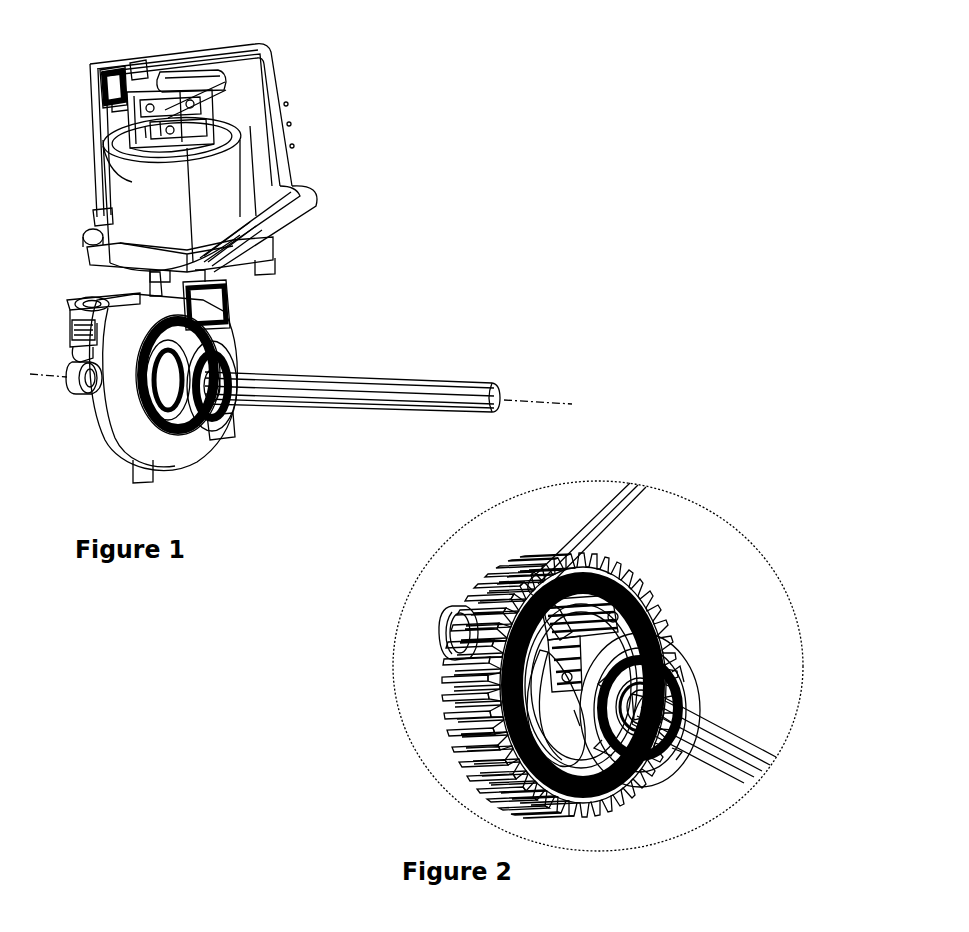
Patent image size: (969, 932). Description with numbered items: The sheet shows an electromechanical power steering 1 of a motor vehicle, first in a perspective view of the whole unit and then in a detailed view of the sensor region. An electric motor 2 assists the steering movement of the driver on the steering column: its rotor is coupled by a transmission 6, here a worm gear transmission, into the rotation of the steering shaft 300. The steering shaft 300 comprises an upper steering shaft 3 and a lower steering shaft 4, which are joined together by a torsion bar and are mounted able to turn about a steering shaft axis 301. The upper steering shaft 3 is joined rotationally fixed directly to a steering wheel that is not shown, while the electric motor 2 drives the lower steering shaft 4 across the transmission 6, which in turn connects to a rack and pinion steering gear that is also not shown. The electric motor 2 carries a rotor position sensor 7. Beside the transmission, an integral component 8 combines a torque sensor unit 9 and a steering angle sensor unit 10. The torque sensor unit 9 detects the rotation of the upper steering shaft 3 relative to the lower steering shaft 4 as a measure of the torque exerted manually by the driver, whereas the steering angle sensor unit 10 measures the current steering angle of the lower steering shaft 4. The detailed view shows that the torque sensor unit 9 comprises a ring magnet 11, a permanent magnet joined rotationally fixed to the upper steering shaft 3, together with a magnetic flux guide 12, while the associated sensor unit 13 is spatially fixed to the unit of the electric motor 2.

In FIG. 1, the electromechanical power steering 1 is at (388, 167).
In FIG. 1, the electric motor 2 is at (212, 206).
In FIG. 1, the upper steering shaft 3 is at (396, 392).
In FIG. 2, the upper steering shaft 3 is at (733, 747).
In FIG. 1, the lower steering shaft 4 is at (80, 388).
In FIG. 2, the lower steering shaft 4 is at (452, 608).
In FIG. 1, the transmission 6 is at (207, 447).
In FIG. 1, the rotor position sensor 7 is at (214, 100).
In FIG. 1, the integral component 8 is at (227, 330).
In FIG. 2, the integral component 8 is at (670, 593).
In FIG. 2, the torque sensor unit 9 is at (580, 610).
In FIG. 2, the steering angle sensor unit 10 is at (566, 653).
In FIG. 2, the ring magnet 11 is at (697, 677).
In FIG. 2, the magnetic flux guide 12 is at (687, 667).
In FIG. 2, the sensor unit 13 is at (587, 800).
In FIG. 1, the steering shaft 300 is at (361, 369).
In FIG. 1, the steering shaft axis 301 is at (533, 399).